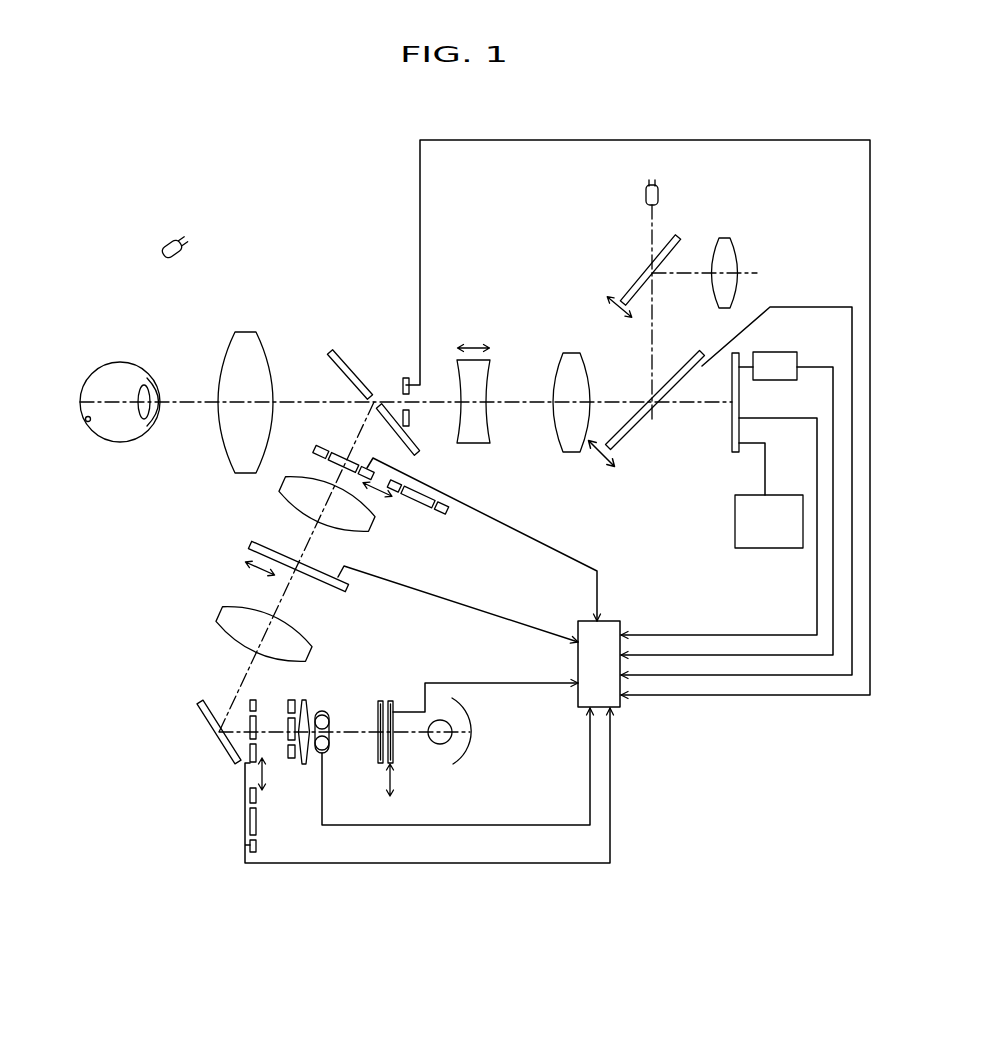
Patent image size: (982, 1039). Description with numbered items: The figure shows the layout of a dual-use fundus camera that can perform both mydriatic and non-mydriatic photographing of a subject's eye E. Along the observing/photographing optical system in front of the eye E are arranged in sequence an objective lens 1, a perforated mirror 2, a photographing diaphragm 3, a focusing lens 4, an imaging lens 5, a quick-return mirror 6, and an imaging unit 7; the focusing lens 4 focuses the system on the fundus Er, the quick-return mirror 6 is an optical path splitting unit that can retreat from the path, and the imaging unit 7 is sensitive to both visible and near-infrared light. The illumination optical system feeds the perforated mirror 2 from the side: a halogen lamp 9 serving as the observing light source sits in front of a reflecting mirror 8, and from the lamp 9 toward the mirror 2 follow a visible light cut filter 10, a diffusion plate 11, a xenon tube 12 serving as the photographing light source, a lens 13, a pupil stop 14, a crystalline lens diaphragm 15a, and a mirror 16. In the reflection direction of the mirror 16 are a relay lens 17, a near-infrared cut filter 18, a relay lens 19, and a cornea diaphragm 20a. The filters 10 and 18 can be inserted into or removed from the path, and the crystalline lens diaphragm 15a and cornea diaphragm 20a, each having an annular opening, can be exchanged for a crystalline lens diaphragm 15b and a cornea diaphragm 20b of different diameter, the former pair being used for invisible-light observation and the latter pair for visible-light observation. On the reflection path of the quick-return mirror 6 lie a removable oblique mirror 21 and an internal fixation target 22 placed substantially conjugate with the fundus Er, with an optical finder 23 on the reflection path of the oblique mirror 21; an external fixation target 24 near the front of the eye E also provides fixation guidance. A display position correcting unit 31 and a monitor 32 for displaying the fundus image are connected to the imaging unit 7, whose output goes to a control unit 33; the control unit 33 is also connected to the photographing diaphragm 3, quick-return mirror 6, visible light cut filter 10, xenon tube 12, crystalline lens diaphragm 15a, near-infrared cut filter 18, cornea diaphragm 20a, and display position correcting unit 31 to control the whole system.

The objective lens 1 is at (246, 332).
The perforated mirror 2 is at (345, 363).
The photographing diaphragm 3 is at (404, 382).
The focusing lens 4 is at (480, 444).
The imaging lens 5 is at (560, 444).
The quick-return mirror 6 is at (630, 434).
The imaging unit 7 is at (732, 440).
The reflecting mirror 8 is at (466, 749).
The halogen lamp 9 is at (433, 744).
The visible light cut filter 10 is at (393, 706).
The diffusion plate 11 is at (380, 703).
The xenon tube 12 is at (330, 716).
The lens 13 is at (306, 700).
The pupil stop 14 is at (290, 702).
The crystalline lens diaphragm 15a is at (250, 763).
The crystalline lens diaphragm 15b is at (250, 846).
The mirror 16 is at (198, 705).
The relay lens 17 is at (235, 613).
The near-infrared cut filter 18 is at (255, 547).
The relay lens 19 is at (347, 532).
The cornea diaphragm 20a is at (326, 451).
The cornea diaphragm 20b is at (438, 514).
The oblique mirror 21 is at (626, 296).
The internal fixation target 22 is at (646, 194).
The optical finder 23 is at (732, 250).
The external fixation target 24 is at (178, 257).
The display position correcting unit 31 is at (790, 364).
The monitor 32 is at (781, 548).
The control unit 33 is at (610, 625).
The subject's eye E is at (118, 368).
The fundus Er is at (90, 421).